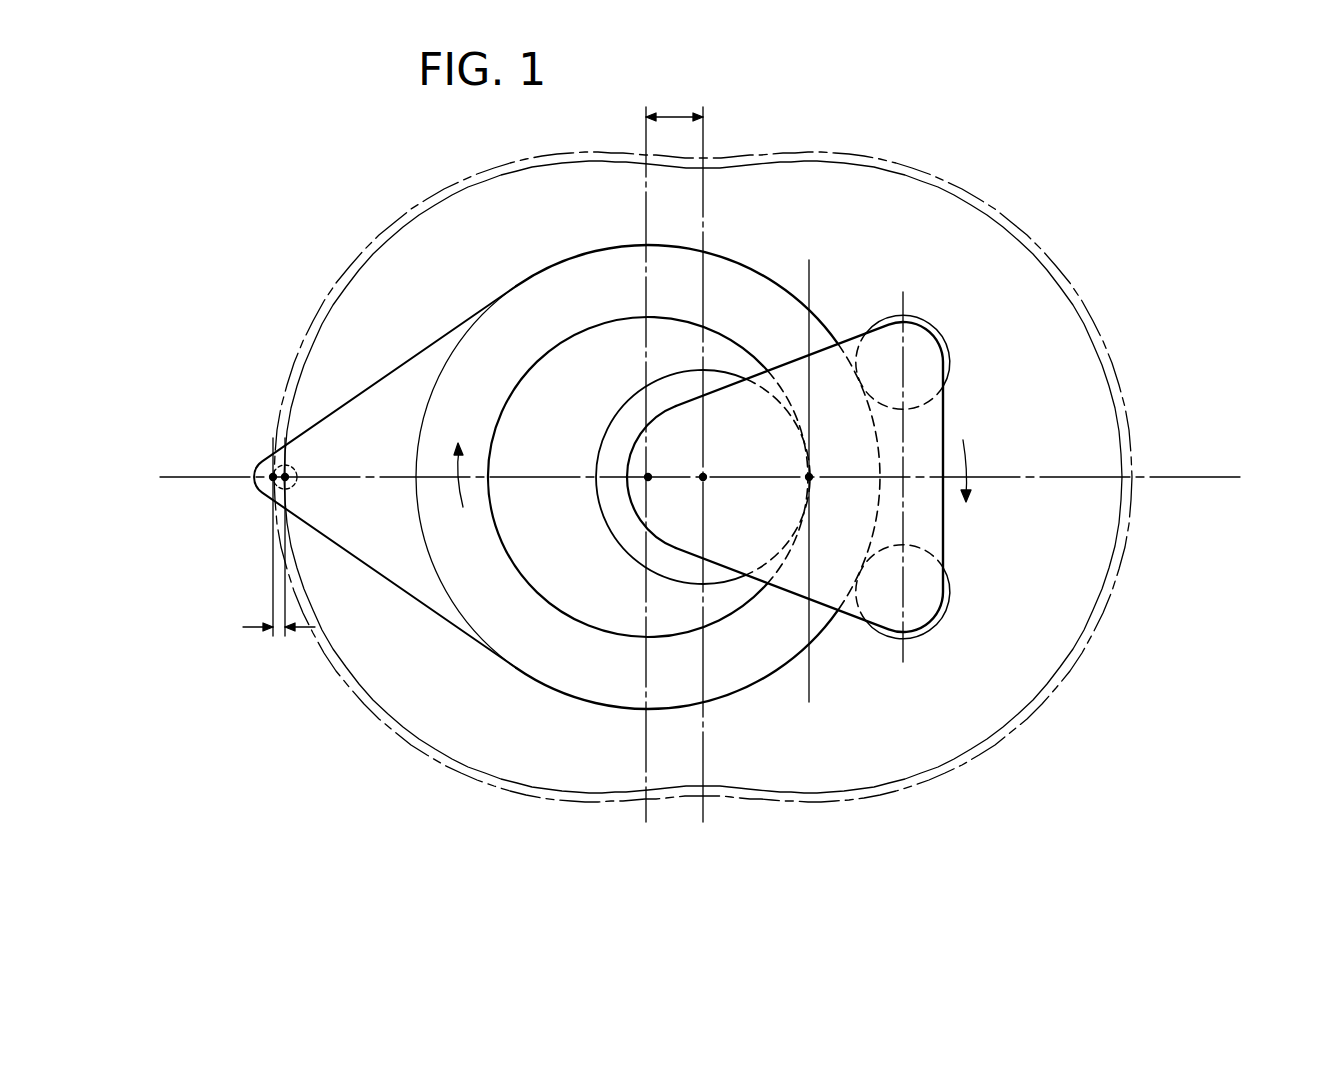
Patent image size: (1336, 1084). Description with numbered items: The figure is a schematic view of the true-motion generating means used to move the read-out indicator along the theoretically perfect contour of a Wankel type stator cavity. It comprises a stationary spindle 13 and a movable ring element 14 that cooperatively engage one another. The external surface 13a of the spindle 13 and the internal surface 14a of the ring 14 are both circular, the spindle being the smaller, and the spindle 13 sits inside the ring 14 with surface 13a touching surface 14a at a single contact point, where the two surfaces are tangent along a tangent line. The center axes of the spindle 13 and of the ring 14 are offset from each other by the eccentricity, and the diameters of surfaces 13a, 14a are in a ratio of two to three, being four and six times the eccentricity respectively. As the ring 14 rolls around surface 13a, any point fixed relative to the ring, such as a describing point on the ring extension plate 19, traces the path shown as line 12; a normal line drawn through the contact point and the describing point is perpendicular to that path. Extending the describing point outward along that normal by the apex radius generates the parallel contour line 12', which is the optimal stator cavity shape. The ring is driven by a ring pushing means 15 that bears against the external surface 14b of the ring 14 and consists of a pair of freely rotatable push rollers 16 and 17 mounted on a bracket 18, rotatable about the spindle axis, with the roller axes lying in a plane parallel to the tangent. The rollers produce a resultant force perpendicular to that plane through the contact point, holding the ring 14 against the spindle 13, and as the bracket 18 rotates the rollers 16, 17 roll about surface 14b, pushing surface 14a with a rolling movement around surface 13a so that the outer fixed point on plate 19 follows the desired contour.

The line 12 is at (725, 477).
The line 12' is at (703, 477).
The stationary spindle 13 is at (617, 420).
The external surface 13a is at (600, 515).
The ring element 14 is at (626, 482).
The internal surface 14a is at (563, 345).
The external surface 14b is at (438, 375).
The ring pushing means 15 is at (918, 674).
The push roller 16 is at (953, 362).
The push roller 17 is at (953, 592).
The bracket 18 is at (927, 418).
The ring extension plate 19 is at (380, 559).